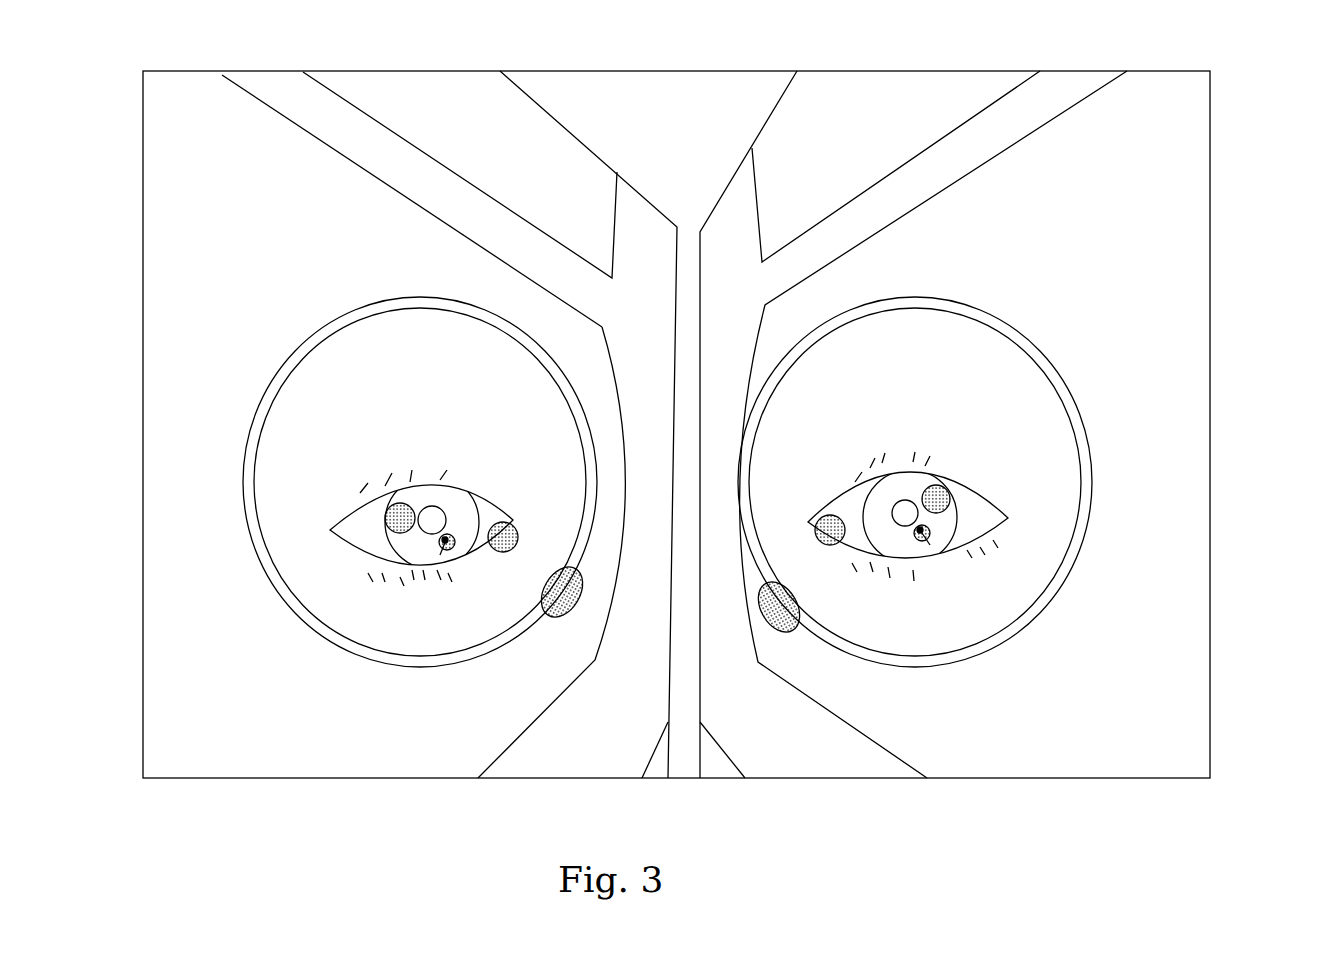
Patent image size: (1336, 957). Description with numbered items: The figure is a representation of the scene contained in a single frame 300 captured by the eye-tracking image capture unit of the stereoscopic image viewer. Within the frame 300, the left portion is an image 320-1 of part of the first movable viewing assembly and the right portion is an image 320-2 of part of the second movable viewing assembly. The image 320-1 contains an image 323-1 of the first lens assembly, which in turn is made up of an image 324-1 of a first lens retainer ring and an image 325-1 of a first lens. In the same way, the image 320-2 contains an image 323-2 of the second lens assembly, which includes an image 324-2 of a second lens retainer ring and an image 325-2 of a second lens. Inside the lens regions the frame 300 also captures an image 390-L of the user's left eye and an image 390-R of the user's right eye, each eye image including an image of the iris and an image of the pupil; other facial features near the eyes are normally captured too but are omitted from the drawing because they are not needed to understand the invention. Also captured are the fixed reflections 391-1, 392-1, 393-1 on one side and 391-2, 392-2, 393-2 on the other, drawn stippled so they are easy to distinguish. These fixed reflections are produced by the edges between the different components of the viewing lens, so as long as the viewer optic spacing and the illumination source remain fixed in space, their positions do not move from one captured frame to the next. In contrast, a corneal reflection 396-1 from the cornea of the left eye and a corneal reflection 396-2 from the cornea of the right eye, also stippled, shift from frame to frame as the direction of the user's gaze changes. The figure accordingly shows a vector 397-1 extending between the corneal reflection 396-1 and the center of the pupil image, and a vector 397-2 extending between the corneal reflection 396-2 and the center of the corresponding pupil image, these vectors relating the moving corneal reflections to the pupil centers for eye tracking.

The frame 300 is at (890, 72).
The image of a portion of first movable viewing assembly 320-1 is at (245, 192).
The image of a portion of second movable viewing assembly 320-2 is at (1153, 192).
The image of first lens assembly 323-1 is at (280, 355).
The image of second lens assembly 323-2 is at (1085, 383).
The image of first lens retainer ring 324-1 is at (327, 330).
The image of second lens retainer ring 324-2 is at (940, 313).
The image of first lens 325-1 is at (292, 502).
The image of second lens 325-2 is at (1060, 447).
The image of user's right eye 390-R is at (348, 518).
The image of user's left eye 390-L is at (347, 535).
The fixed reflection 391-1 is at (550, 610).
The fixed reflection 391-2 is at (793, 623).
The fixed reflection 392-1 is at (512, 520).
The fixed reflection 392-2 is at (827, 528).
The fixed reflection 393-1 is at (403, 510).
The fixed reflection 393-2 is at (940, 483).
The corneal reflection 396-1 is at (446, 540).
The corneal reflection 396-2 is at (922, 533).
The vector 397-1 is at (445, 540).
The vector 397-2 is at (920, 530).